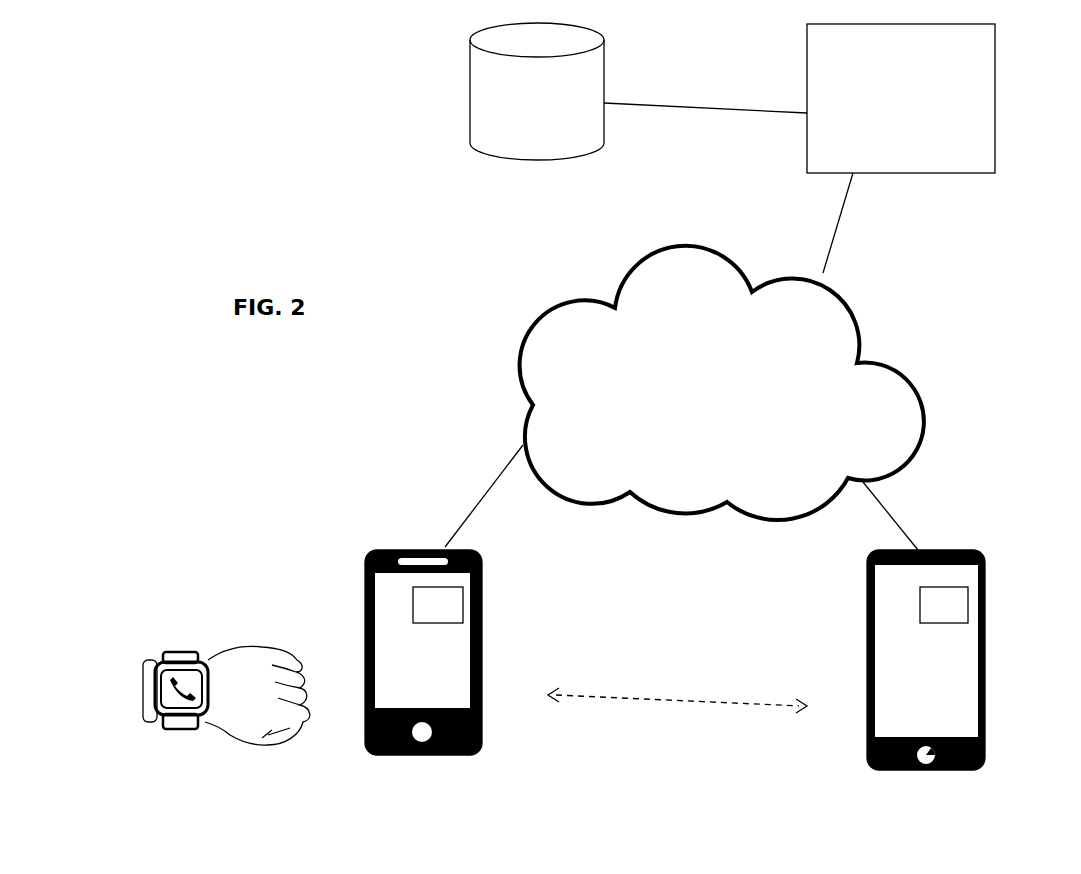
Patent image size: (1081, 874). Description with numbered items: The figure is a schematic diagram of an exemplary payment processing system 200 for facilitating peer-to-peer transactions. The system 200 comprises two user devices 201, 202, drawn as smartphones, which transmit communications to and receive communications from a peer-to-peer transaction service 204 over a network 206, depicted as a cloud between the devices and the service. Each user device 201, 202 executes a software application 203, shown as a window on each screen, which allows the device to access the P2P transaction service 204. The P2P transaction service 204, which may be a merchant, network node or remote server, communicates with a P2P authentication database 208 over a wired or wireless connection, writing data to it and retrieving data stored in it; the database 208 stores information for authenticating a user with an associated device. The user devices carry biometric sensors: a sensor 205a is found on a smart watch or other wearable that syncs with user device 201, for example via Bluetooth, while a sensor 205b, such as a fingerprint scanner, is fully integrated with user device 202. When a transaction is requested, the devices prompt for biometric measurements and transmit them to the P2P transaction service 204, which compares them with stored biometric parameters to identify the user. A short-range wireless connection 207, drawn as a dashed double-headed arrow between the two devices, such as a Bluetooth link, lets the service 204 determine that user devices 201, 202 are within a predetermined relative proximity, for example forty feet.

The payment processing system 200 is at (186, 97).
The user device 201 is at (482, 582).
The user device 202 is at (983, 562).
The software application 203 is at (463, 612).
The P2P transaction service 204 is at (989, 67).
The sensor 205a is at (197, 660).
The sensor 205b is at (967, 737).
The network 206 is at (722, 383).
The short-range wireless connection 207 is at (653, 720).
The P2P authentication database 208 is at (594, 58).